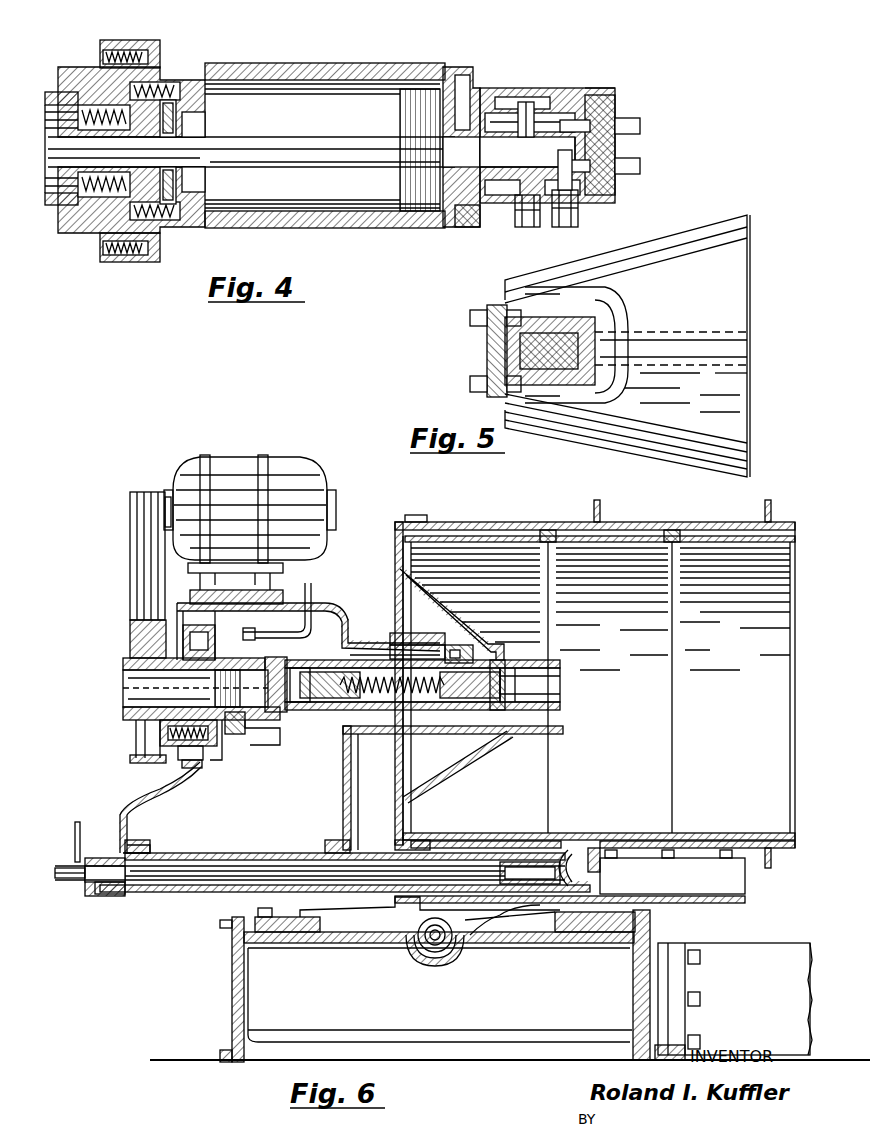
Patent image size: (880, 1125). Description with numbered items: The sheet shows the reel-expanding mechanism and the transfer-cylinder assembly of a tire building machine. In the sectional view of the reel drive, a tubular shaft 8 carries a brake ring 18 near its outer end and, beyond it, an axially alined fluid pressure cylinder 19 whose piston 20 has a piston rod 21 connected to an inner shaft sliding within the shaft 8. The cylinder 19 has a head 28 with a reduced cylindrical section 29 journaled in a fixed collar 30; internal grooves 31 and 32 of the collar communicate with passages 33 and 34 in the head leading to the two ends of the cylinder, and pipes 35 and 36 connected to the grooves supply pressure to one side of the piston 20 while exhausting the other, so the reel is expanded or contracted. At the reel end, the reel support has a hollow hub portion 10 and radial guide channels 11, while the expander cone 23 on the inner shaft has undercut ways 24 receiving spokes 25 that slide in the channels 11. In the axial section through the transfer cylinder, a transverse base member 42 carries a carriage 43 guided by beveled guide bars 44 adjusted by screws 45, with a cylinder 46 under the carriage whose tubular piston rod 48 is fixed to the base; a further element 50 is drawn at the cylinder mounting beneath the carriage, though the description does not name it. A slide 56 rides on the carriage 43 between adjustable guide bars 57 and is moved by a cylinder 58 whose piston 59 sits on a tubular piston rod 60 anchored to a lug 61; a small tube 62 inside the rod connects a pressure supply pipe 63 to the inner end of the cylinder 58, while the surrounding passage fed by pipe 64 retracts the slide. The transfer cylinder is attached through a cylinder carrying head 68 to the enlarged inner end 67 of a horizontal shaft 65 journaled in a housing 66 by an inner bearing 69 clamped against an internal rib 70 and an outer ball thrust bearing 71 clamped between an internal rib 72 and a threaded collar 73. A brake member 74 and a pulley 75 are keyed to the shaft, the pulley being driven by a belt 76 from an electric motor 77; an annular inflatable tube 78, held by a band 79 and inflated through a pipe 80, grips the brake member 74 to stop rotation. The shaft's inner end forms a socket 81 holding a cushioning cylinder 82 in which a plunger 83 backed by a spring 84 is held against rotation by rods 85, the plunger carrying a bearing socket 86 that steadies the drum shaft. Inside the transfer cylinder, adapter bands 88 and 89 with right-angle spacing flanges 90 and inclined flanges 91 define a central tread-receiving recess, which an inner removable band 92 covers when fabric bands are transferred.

In FIG. 4, the tubular shaft 8 is at (50, 92).
In FIG. 4, the brake ring 18 is at (115, 262).
In FIG. 4, the fluid pressure cylinder 19 is at (290, 63).
In FIG. 4, the piston 20 is at (398, 119).
In FIG. 4, the piston rod 21 is at (315, 160).
In FIG. 4, the head 28 is at (458, 218).
In FIG. 4, the cylindrical section 29 is at (545, 88).
In FIG. 4, the fixed collar 30 is at (592, 85).
In FIG. 4, the internal groove 31 is at (526, 102).
In FIG. 4, the internal groove 32 is at (590, 90).
In FIG. 4, the passage 33 is at (440, 85).
In FIG. 4, the passage 34 is at (500, 116).
In FIG. 4, the pipe 35 is at (518, 225).
In FIG. 4, the pipe 36 is at (580, 215).
In FIG. 5, the hollow hub portion 10 is at (618, 310).
In FIG. 5, the radially disposed guide channels 11 is at (570, 318).
In FIG. 5, the expander cone 23 is at (740, 392).
In FIG. 5, the undercut ways 24 is at (748, 346).
In FIG. 5, the spokes 25 is at (487, 352).
In FIG. 6, the transverse base member 42 is at (232, 993).
In FIG. 6, the carriage 43 is at (708, 899).
In FIG. 6, the beveled guide bars 44 is at (268, 943).
In FIG. 6, the screws 45 is at (222, 928).
In FIG. 6, the cylinder 46 is at (460, 955).
In FIG. 6, the tubular piston rod 48 is at (415, 955).
In FIG. 6, the pivot pin 50 is at (440, 945).
In FIG. 6, the slide 56 is at (125, 800).
In FIG. 6, the adjustable guide bars 57 is at (648, 862).
In FIG. 6, the cylinder 58 is at (212, 854).
In FIG. 6, the piston 59 is at (594, 848).
In FIG. 6, the tubular piston rod 60 is at (180, 895).
In FIG. 6, the lug 61 is at (112, 896).
In FIG. 6, the small tube 62 is at (105, 858).
In FIG. 6, the pressure supply pipe 63 is at (62, 880).
In FIG. 6, the pipe 64 is at (75, 830).
In FIG. 6, the horizontal shaft 65 is at (265, 672).
In FIG. 6, the housing 66 is at (345, 612).
In FIG. 6, the enlarged inner end 67 is at (500, 636).
In FIG. 6, the cylinder carrying head 68 is at (462, 615).
In FIG. 6, the inner bearing 69 is at (458, 648).
In FIG. 6, the internal rib 70 is at (414, 633).
In FIG. 6, the outer ball thrust bearing 71 is at (238, 722).
In FIG. 6, the internal rib 72 is at (275, 732).
In FIG. 6, the threaded collar 73 is at (230, 745).
In FIG. 6, the brake member 74 is at (180, 727).
In FIG. 6, the pulley 75 is at (132, 650).
In FIG. 6, the belt 76 is at (130, 565).
In FIG. 6, the electric motor 77 is at (285, 468).
In FIG. 6, the inflatable tube 78 is at (180, 755).
In FIG. 6, the band 79 is at (205, 762).
In FIG. 6, the pipe 80 is at (313, 588).
In FIG. 6, the socket 81 is at (320, 710).
In FIG. 6, the cushioning cylinder 82 is at (428, 710).
In FIG. 6, the plunger 83 is at (520, 670).
In FIG. 6, the spring 84 is at (366, 710).
In FIG. 6, the rods 85 is at (365, 655).
In FIG. 6, the bearing socket 86 is at (515, 703).
In FIG. 6, the adapter band 88 is at (482, 528).
In FIG. 6, the adapter band 89 is at (712, 528).
In FIG. 6, the spacing flange 90 is at (414, 516).
In FIG. 6, the spacing flange 91 is at (548, 524).
In FIG. 6, the inner removable band 92 is at (668, 628).